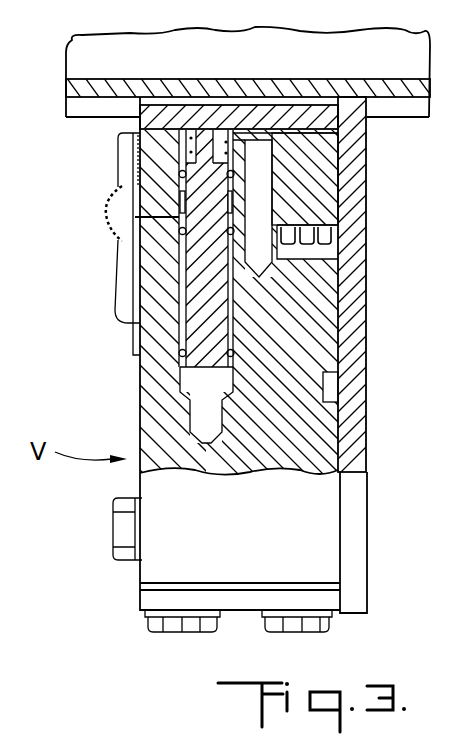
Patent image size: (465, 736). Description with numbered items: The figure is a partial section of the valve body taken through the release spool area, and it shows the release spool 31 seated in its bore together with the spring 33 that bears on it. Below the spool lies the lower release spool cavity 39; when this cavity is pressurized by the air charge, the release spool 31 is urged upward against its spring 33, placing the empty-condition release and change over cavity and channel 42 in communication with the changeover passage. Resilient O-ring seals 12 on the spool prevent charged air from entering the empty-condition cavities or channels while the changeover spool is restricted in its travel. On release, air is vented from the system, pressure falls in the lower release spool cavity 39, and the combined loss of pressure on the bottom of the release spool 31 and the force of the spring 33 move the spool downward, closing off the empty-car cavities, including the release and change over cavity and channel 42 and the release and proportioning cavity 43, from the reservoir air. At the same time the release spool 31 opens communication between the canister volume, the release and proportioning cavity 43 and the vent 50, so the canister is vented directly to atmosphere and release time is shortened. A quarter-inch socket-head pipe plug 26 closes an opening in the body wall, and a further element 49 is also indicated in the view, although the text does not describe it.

The O-ring 12 is at (178, 168).
The pipe plug 26 is at (338, 241).
The release spool 31 is at (215, 301).
The spring 33 is at (276, 138).
The lower release spool cavity 39 is at (190, 384).
The release and change over cavity and channel 42 is at (179, 322).
The release and proportioning cavity 43 is at (265, 186).
The knob 49 is at (108, 205).
The vent 50 is at (150, 218).